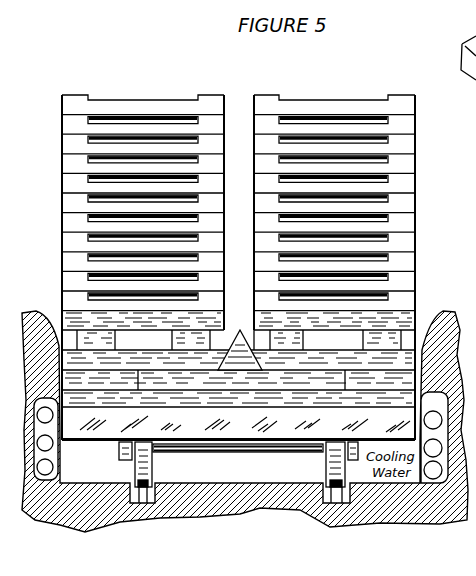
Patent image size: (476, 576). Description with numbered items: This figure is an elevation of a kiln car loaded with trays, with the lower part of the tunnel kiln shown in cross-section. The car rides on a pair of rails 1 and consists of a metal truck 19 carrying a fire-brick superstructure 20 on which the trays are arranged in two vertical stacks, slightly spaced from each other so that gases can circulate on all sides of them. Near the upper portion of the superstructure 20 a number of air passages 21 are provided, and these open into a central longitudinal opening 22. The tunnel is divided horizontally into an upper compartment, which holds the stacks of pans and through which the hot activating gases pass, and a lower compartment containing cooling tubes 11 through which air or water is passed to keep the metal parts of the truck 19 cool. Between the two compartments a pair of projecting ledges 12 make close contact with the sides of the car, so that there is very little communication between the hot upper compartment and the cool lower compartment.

The rails 1 is at (323, 500).
The cooling tubes 11 is at (58, 445).
The projecting ledges 12 is at (423, 346).
The metal truck 19 is at (175, 456).
The fire-brick superstructure 20 is at (64, 333).
The air passages 21 is at (238, 340).
The central longitudinal opening 22 is at (226, 338).